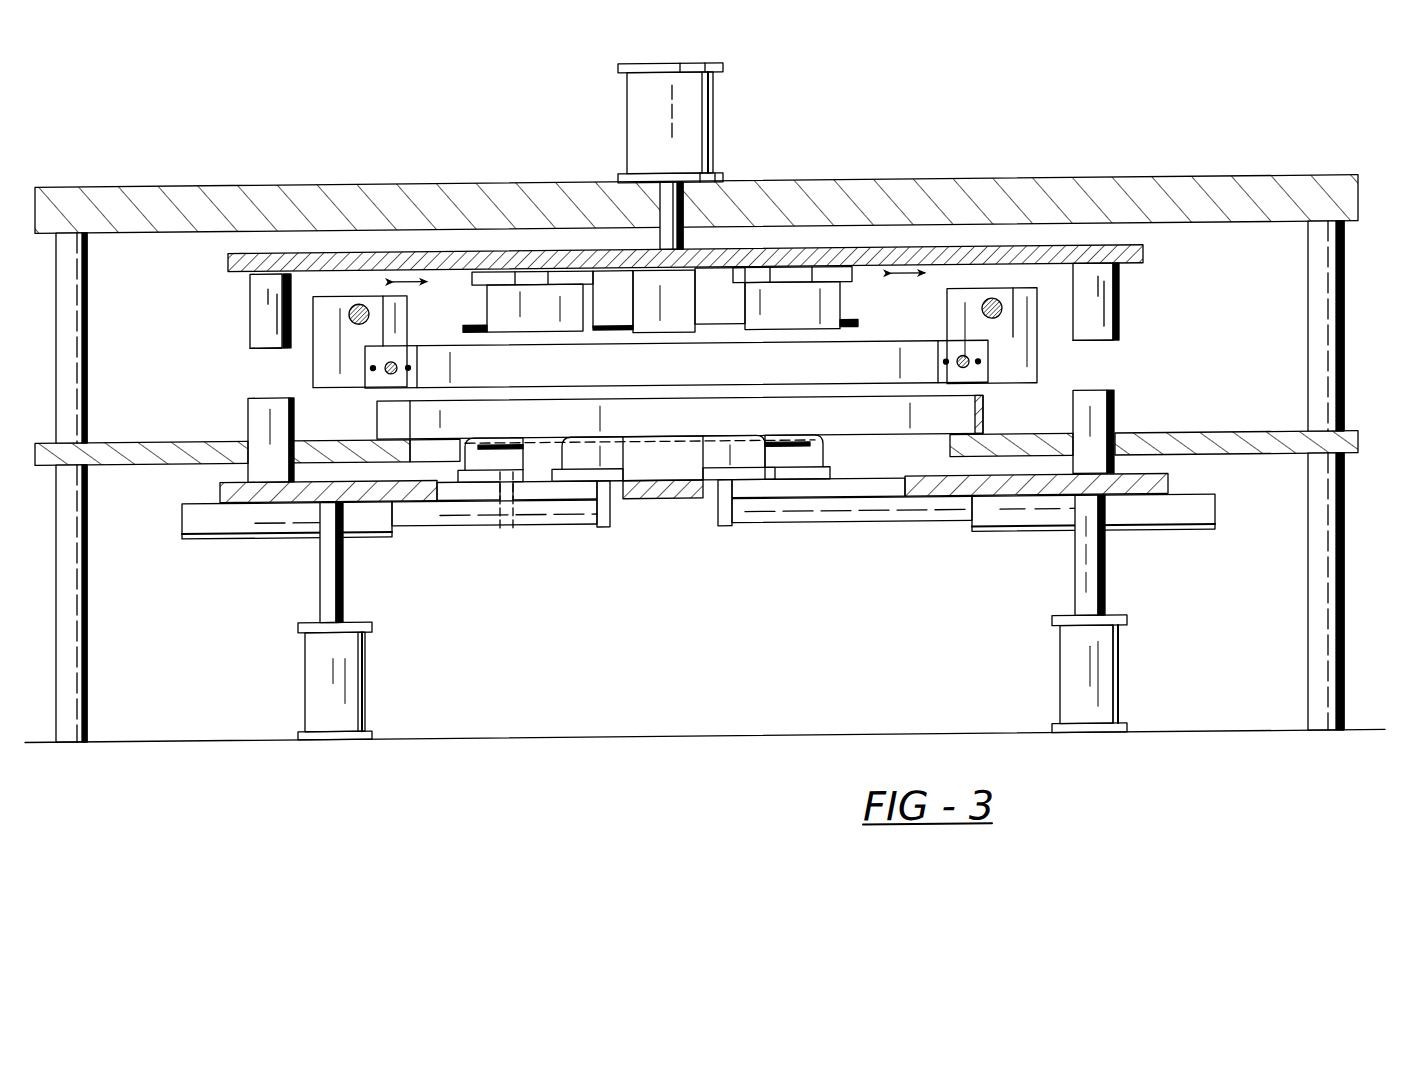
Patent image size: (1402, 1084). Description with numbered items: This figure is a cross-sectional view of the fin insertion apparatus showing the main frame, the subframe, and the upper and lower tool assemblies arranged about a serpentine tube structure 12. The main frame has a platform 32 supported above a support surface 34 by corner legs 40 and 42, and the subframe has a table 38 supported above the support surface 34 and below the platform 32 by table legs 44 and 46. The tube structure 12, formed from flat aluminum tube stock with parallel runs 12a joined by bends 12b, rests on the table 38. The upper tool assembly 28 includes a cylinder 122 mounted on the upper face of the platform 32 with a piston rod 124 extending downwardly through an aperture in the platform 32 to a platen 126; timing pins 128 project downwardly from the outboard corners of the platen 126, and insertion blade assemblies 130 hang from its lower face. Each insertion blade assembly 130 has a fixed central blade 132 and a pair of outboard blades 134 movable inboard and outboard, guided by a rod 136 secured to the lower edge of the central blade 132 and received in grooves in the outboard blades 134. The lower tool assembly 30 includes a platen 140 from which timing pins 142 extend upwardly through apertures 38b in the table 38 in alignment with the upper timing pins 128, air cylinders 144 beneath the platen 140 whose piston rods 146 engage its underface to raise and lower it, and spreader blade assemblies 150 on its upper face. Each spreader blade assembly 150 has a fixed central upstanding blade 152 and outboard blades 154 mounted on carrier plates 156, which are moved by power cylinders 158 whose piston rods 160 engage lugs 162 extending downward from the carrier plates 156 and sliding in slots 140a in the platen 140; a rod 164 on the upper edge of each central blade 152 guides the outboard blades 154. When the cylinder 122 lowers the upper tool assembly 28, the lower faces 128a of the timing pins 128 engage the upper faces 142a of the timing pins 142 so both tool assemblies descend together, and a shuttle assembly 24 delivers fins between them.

The tube structure 12 is at (860, 393).
The runs 12a is at (905, 433).
The bends 12b is at (992, 427).
The shuttle assembly 24 is at (357, 280).
The upper tool assembly 28 is at (808, 236).
The lower tool assembly 30 is at (628, 535).
The platform 32 is at (297, 181).
The support surface 34 is at (787, 736).
The table 38 is at (696, 423).
The apertures 38b is at (1118, 430).
The corner leg 40 is at (88, 302).
The corner leg 42 is at (1308, 295).
The table leg 44 is at (88, 652).
The table leg 46 is at (1308, 688).
The cylinder 122 is at (636, 107).
The piston rod 124 is at (690, 205).
The platen 126 is at (1000, 249).
The timing pins 128 is at (252, 300).
The lower faces 128a is at (257, 345).
The insertion blade assemblies 130 is at (585, 345).
The central blade 132 is at (662, 332).
The outboard blades 134 is at (498, 312).
The rod 136 is at (727, 333).
The platen 140 is at (1175, 482).
The slots 140a is at (460, 490).
The timing pins 142 is at (248, 425).
The upper faces 142a is at (278, 393).
The air cylinders 144 is at (318, 690).
The piston rods 146 is at (343, 580).
The spreader blade assemblies 150 is at (632, 438).
The central blade 152 is at (667, 500).
The outboard blades 154 is at (593, 453).
The carrier plates 156 is at (573, 498).
The power cylinders 158 is at (1198, 524).
The piston rods 160 is at (530, 523).
The lugs 162 is at (727, 527).
The rod 164 is at (503, 438).